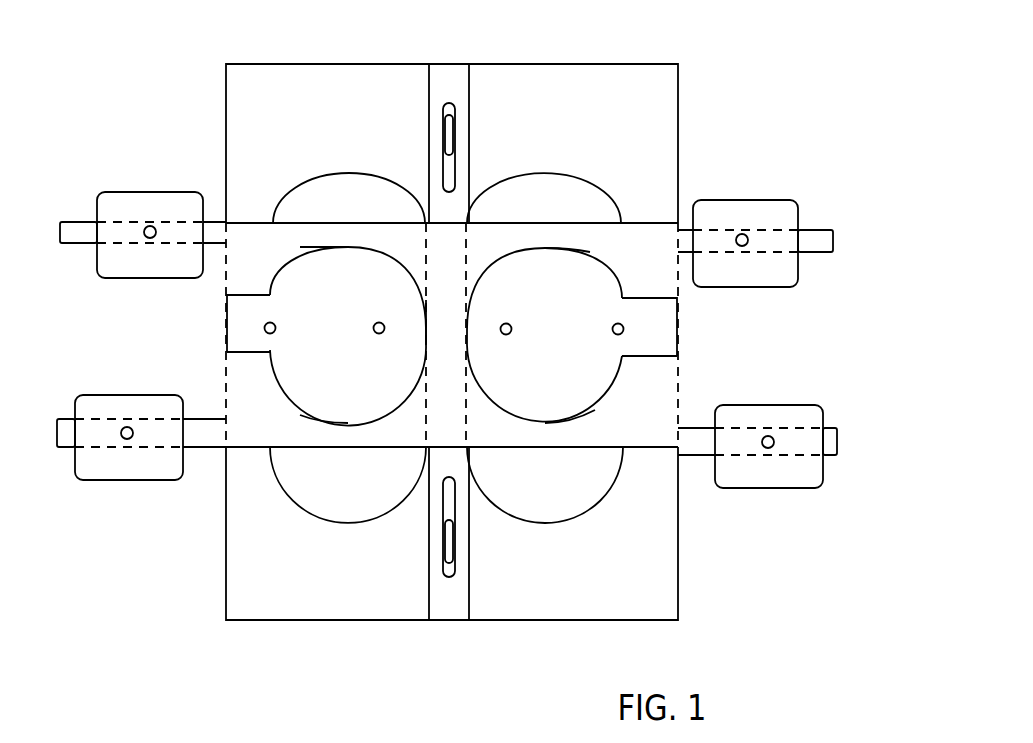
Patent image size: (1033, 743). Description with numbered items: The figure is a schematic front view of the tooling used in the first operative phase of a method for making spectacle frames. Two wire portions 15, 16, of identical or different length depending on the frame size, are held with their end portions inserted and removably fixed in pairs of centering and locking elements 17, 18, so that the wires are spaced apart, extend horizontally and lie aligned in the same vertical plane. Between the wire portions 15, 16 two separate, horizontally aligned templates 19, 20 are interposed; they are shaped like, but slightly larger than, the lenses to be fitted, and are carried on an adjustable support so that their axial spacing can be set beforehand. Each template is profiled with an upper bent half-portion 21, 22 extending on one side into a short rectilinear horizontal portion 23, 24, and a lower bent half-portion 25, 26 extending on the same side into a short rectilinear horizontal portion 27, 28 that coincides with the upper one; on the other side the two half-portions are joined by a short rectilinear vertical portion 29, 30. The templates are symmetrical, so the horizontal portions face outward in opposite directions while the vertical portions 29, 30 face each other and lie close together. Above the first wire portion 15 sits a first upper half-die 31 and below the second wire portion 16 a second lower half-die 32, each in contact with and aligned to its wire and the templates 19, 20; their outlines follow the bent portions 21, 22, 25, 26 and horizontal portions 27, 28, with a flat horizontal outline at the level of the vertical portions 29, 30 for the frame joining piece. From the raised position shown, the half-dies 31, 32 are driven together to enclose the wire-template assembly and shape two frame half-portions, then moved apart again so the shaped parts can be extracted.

The first wire portion 15 is at (642, 208).
The second wire portion 16 is at (643, 467).
The centering and locking element 17 is at (162, 205).
The centering and locking element 18 is at (770, 217).
The first template 19 is at (305, 290).
The second template 20 is at (572, 312).
The upper bent half-portion 21 is at (416, 265).
The upper bent half-portion 22 is at (540, 252).
The short rectilinear horizontal portion 23 is at (245, 292).
The short rectilinear horizontal portion 24 is at (648, 298).
The lower bent half-portion 25 is at (303, 410).
The lower bent half-portion 26 is at (600, 405).
The short rectilinear horizontal portion 27 is at (243, 355).
The short rectilinear horizontal portion 28 is at (650, 358).
The short rectilinear vertical portion 29 is at (427, 312).
The short rectilinear vertical portion 30 is at (452, 335).
The first upper half-die 31 is at (358, 98).
The second lower half-die 32 is at (360, 582).